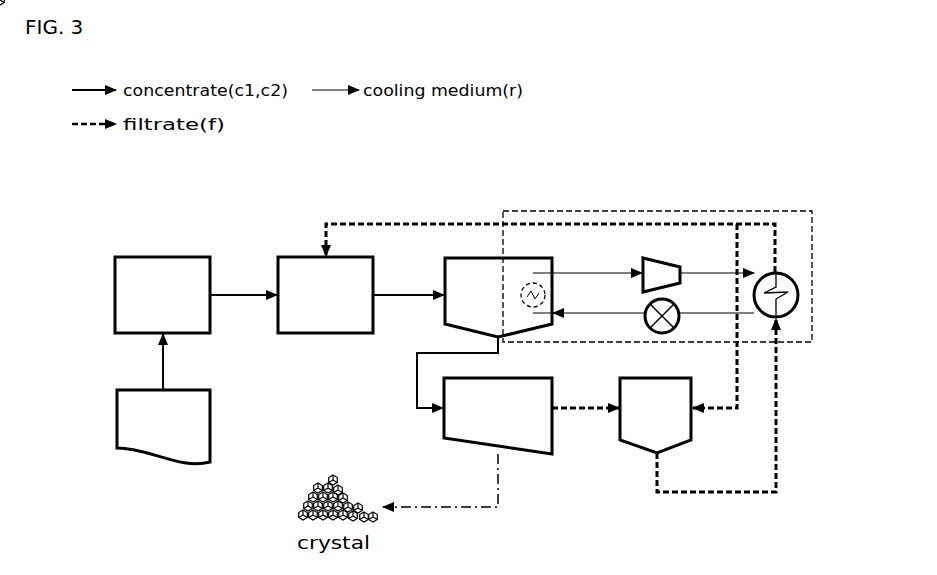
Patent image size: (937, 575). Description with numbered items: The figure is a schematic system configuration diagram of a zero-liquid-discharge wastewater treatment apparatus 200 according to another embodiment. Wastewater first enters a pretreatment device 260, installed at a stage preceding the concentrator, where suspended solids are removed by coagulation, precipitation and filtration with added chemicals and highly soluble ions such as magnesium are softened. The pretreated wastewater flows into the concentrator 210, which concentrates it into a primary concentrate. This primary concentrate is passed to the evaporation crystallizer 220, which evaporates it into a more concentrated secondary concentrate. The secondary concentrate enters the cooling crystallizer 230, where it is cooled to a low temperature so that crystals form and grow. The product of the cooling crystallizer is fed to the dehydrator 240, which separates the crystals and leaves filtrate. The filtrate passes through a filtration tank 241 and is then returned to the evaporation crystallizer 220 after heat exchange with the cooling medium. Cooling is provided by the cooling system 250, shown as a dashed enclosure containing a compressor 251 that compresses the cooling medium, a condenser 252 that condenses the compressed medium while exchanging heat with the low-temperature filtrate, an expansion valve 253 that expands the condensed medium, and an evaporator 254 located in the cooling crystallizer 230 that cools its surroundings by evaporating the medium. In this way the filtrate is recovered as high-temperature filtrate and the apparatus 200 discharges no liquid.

The ZLD wastewater treatment apparatus 200 is at (563, 175).
The concentrator 210 is at (167, 257).
The evaporation crystallizer 220 is at (302, 257).
The cooling crystallizer 230 is at (450, 258).
The dehydrator 240 is at (525, 456).
The filtration tank 241 is at (633, 452).
The cooling system 250 is at (755, 211).
The compressor 251 is at (655, 257).
The condenser 252 is at (798, 291).
The expansion valve 253 is at (663, 333).
The evaporator 254 is at (531, 282).
The pretreatment device 260 is at (117, 412).